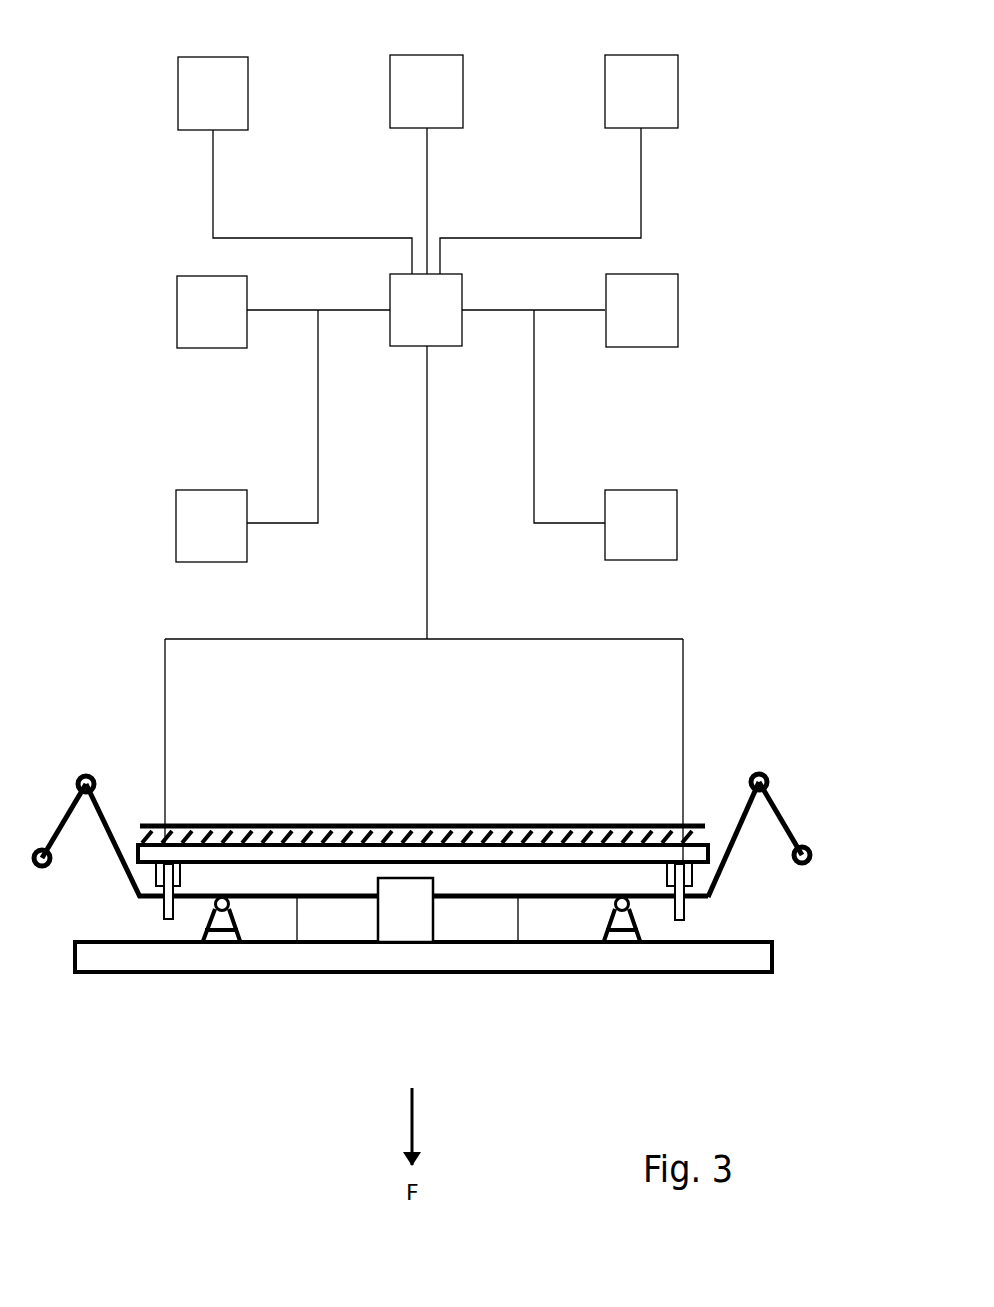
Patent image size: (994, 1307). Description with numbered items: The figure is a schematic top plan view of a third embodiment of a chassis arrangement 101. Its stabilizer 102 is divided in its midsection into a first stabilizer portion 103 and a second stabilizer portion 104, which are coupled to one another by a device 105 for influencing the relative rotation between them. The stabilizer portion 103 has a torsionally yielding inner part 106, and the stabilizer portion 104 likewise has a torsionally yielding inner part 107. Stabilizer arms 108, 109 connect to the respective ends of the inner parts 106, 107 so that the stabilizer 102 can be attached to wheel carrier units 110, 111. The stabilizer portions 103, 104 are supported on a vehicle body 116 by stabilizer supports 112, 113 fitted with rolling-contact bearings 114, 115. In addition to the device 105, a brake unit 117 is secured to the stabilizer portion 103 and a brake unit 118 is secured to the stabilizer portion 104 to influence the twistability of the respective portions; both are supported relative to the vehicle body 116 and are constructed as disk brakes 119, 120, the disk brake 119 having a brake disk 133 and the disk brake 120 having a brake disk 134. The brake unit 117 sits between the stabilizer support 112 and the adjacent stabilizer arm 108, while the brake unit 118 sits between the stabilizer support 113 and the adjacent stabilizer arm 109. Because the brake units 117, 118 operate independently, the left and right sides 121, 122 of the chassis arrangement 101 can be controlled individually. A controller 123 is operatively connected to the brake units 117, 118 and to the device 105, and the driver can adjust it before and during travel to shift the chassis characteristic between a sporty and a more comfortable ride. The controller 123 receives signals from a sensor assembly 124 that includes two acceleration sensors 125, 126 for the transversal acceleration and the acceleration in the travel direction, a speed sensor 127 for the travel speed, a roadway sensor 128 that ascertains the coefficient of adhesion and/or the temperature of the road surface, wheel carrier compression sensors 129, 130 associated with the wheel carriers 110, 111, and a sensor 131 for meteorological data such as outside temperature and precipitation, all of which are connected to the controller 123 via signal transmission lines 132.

The chassis arrangement 101 is at (267, 1076).
The stabilizer 102 is at (358, 920).
The first stabilizer portion 103 is at (333, 914).
The second stabilizer portion 104 is at (467, 902).
The device for influencing relative rotation 105 is at (405, 922).
The inner part 106 is at (297, 972).
The inner part 107 is at (518, 972).
The stabilizer arm 108 is at (122, 864).
The stabilizer arm 109 is at (731, 855).
The wheel carrier unit 110 is at (58, 827).
The wheel carrier unit 111 is at (791, 823).
The stabilizer support 112 is at (222, 973).
The stabilizer support 113 is at (620, 946).
The rolling-contact bearing 114 is at (234, 905).
The rolling-contact bearing 115 is at (612, 904).
The vehicle body 116 is at (110, 973).
The brake unit 117 is at (420, 823).
The brake unit 118 is at (679, 926).
The disk brake 119 is at (184, 877).
The disk brake 120 is at (663, 875).
The left side 121 is at (779, 803).
The right side 122 is at (64, 809).
The controller 123 is at (438, 332).
The sensor assembly 124 is at (178, 250).
The acceleration sensor 125 is at (228, 547).
The acceleration sensor 126 is at (227, 334).
The speed sensor 127 is at (228, 110).
The roadway sensor 128 is at (438, 109).
The wheel carrier compression sensor 129 is at (657, 545).
The wheel carrier compression sensor 130 is at (657, 330).
The sensor for meteorological data 131 is at (657, 109).
The signal transmission line 132 is at (293, 238).
The brake disk 133 is at (163, 912).
The brake disk 134 is at (685, 914).